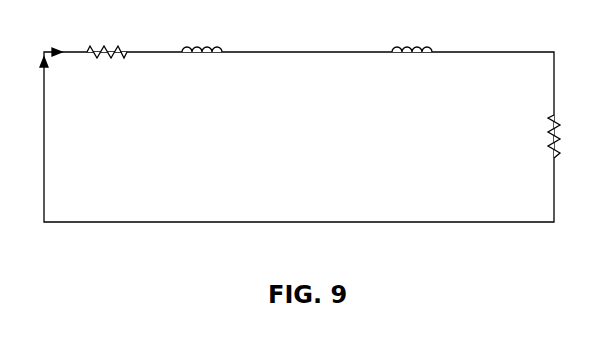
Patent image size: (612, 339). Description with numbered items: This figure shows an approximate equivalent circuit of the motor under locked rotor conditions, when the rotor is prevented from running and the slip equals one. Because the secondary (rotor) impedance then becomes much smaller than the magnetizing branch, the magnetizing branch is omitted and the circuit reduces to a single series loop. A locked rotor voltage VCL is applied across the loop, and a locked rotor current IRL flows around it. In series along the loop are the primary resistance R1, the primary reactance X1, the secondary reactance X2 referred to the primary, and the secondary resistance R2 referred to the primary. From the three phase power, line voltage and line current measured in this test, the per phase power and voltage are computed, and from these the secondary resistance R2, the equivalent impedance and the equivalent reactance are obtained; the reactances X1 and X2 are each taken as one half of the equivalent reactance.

The locked rotor current IRL is at (61, 42).
The locked rotor voltage VCL is at (33, 97).
The primary resistance R1 is at (107, 43).
The primary reactance X1 is at (202, 39).
The secondary reactance X2 is at (412, 39).
The secondary resistance R2 is at (564, 136).